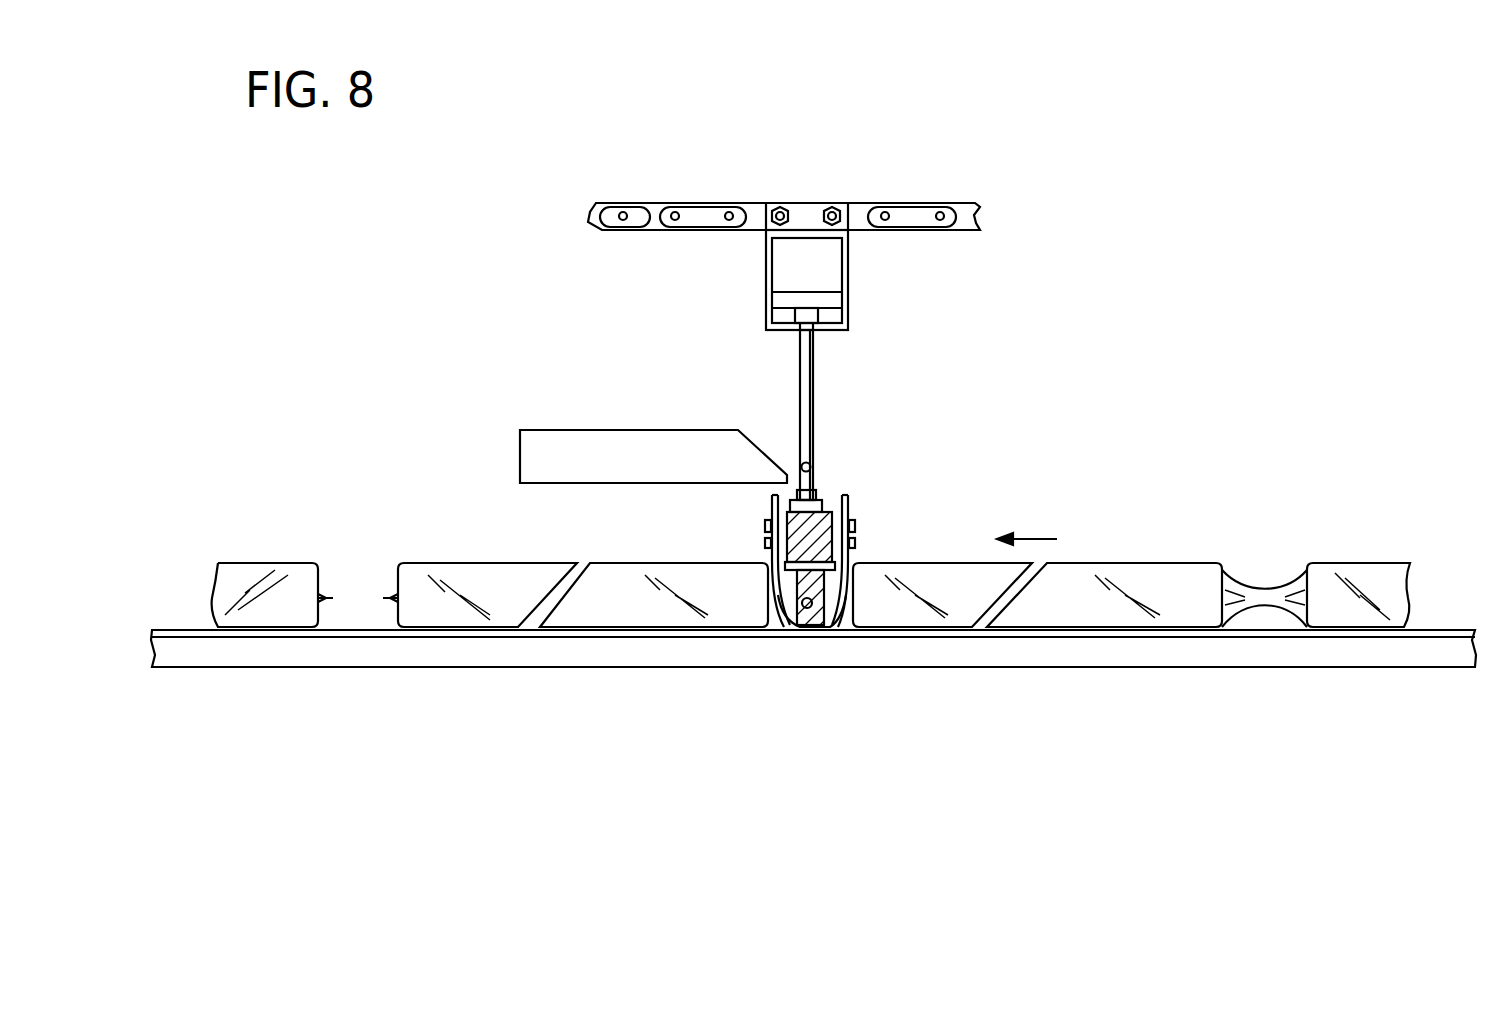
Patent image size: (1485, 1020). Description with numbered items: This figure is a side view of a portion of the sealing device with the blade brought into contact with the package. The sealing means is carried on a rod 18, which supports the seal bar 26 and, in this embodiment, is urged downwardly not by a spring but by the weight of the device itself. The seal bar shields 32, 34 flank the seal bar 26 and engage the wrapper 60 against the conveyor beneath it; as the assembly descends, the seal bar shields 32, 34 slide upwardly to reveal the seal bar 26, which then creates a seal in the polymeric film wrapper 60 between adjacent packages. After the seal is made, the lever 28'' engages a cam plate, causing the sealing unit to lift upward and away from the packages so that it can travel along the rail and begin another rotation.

The rod 18 is at (805, 400).
The lever 28'' is at (856, 450).
The seal bar shield 32 is at (845, 503).
The seal bar shield 34 is at (775, 504).
The seal bar 26 is at (828, 627).
The wrapper 60 is at (782, 627).